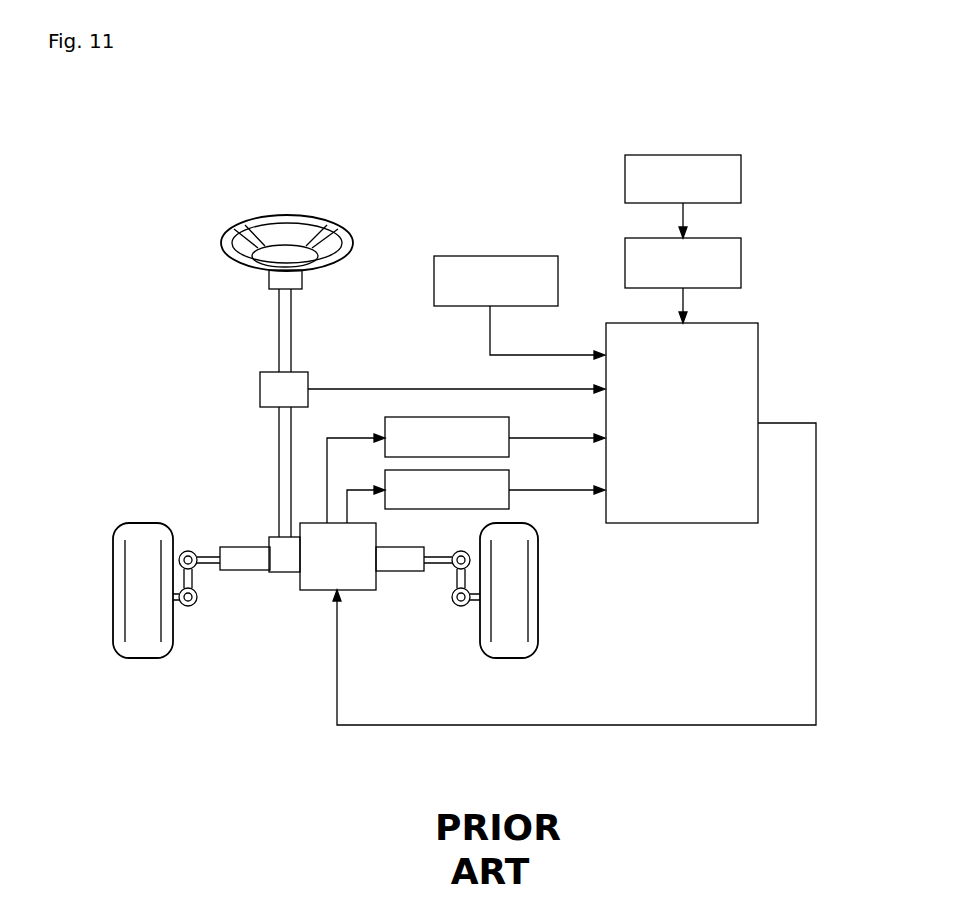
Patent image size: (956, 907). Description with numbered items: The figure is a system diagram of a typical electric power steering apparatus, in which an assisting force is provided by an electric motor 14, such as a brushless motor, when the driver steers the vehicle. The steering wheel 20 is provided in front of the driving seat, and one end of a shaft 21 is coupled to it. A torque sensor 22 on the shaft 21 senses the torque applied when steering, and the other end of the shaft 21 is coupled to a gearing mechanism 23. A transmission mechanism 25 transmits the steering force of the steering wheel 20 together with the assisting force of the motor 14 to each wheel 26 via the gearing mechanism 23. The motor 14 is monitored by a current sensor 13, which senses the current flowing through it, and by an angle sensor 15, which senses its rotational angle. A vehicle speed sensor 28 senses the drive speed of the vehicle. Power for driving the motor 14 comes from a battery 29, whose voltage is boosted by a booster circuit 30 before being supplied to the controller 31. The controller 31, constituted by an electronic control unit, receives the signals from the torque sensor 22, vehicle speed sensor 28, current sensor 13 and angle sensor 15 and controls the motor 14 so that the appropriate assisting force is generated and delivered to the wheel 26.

The current sensor 13 is at (512, 426).
The electric motor 14 is at (357, 592).
The angle sensor 15 is at (512, 479).
The steering wheel 20 is at (345, 232).
The shaft 21 is at (292, 336).
The torque sensor 22 is at (310, 376).
The gearing mechanism 23 is at (278, 574).
The transmission mechanism 25 is at (192, 606).
The wheel 26 is at (113, 590).
The vehicle speed sensor 28 is at (506, 255).
The battery 29 is at (686, 154).
The booster circuit 30 is at (742, 266).
The controller 31 is at (701, 523).